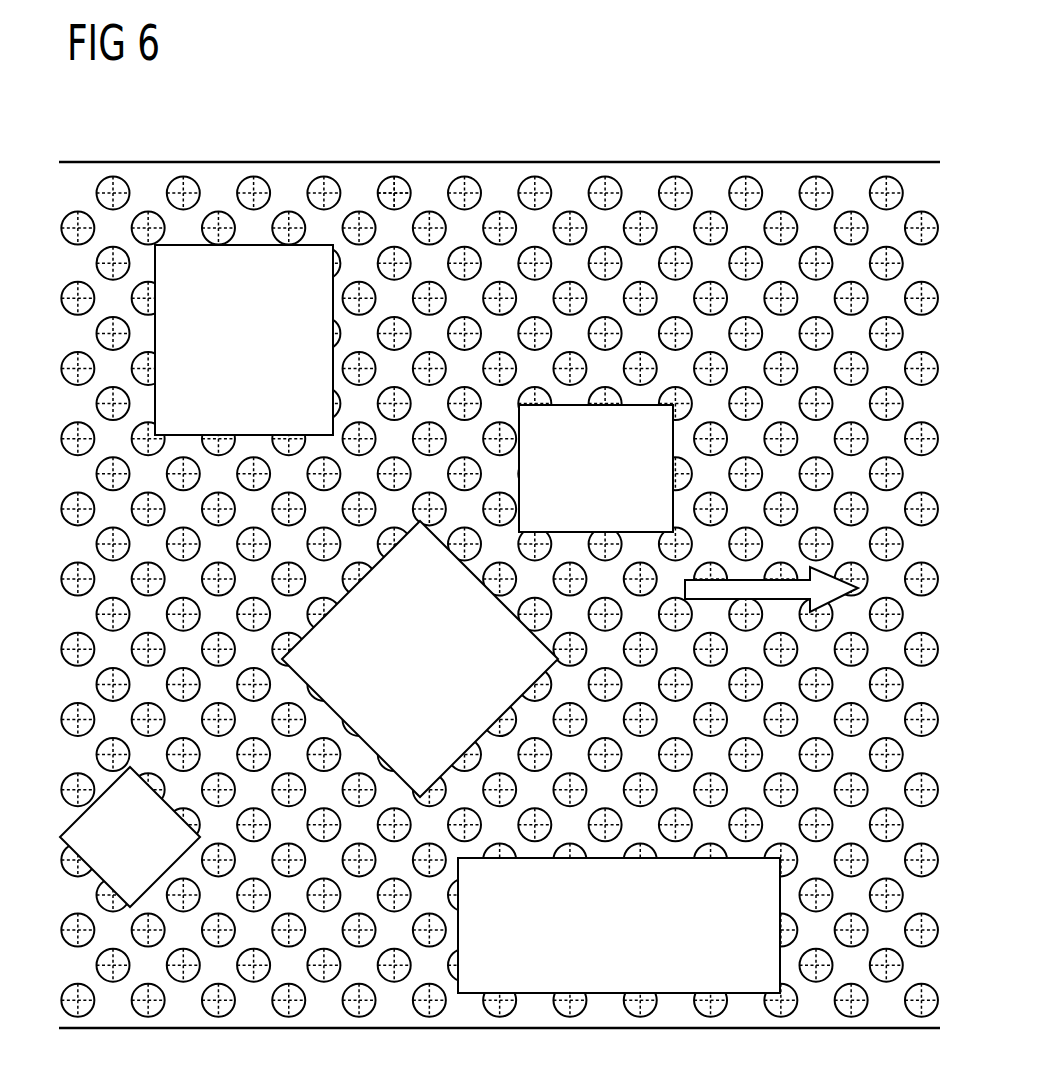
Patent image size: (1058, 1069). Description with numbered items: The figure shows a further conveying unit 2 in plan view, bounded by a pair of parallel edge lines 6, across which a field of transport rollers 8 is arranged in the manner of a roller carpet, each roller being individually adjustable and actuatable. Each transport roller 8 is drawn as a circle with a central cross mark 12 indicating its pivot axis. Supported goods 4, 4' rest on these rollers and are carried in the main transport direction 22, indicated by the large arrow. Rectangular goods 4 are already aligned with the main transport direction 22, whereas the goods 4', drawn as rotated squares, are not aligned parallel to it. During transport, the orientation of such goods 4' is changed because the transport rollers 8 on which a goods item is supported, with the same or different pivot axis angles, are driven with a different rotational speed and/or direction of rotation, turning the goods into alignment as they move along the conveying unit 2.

The conveying unit 2 is at (898, 101).
The supported goods 4 is at (467, 619).
The supported goods not aligned parallel to the main transport direction 4' is at (309, 714).
The carrier 6 is at (780, 173).
The transport rollers 8 is at (474, 180).
The center marking 12 is at (395, 192).
The main transport direction 22 is at (737, 592).